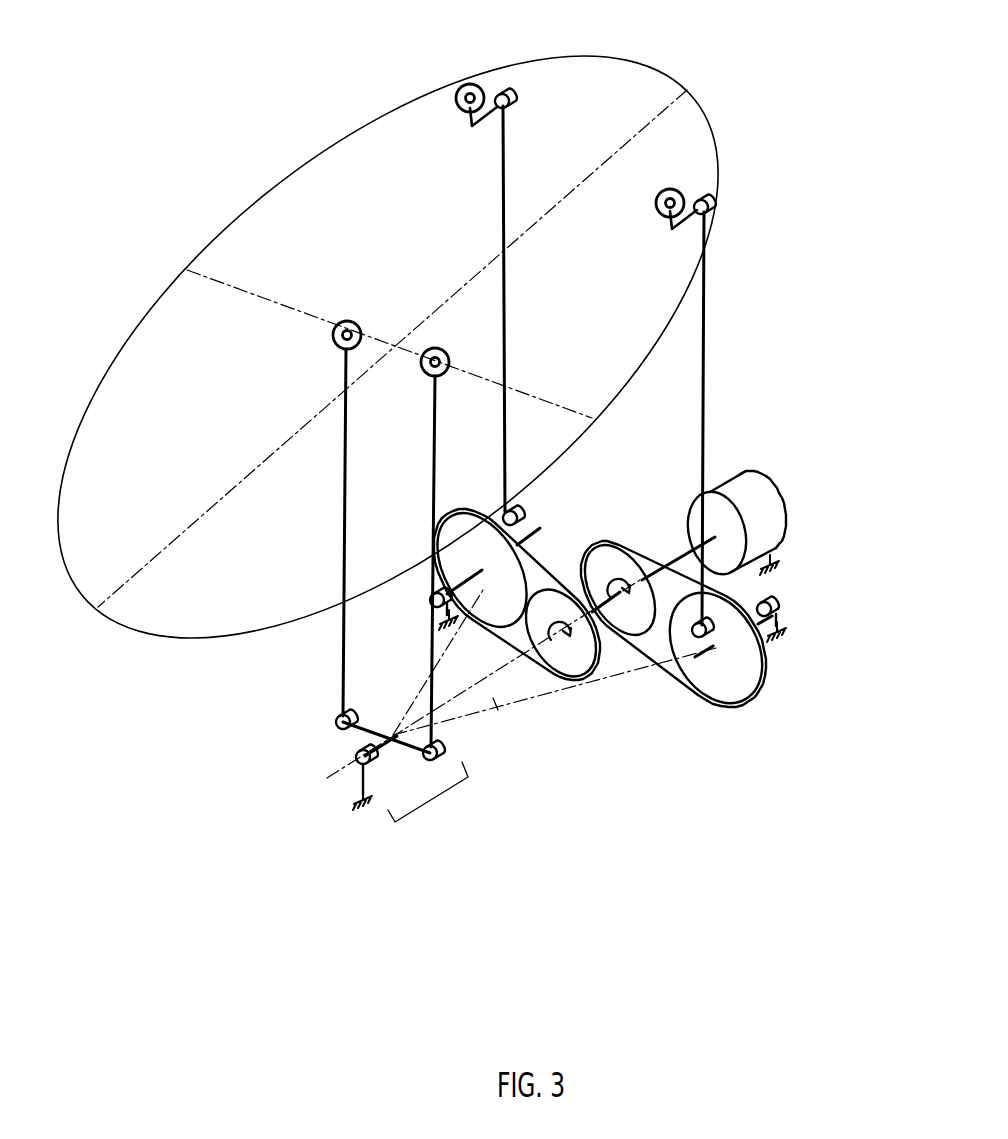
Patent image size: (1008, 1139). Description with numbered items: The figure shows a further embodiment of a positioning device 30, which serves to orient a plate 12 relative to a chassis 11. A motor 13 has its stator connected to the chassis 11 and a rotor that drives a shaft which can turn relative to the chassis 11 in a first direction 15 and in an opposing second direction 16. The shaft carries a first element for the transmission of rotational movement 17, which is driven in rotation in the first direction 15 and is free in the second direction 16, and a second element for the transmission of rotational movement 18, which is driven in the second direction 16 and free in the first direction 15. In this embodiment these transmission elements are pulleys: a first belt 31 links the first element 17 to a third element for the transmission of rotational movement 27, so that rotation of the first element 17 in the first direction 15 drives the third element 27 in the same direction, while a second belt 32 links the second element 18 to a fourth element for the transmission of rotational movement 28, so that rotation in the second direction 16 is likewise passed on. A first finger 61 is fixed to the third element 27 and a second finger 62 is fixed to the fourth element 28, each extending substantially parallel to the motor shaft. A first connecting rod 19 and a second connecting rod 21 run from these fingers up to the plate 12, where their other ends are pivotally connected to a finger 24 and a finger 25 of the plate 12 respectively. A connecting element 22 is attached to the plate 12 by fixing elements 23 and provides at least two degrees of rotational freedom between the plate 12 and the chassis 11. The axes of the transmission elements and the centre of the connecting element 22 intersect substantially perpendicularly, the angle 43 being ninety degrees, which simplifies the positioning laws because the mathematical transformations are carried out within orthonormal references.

The positioning device 30 is at (180, 97).
The plate 12 is at (717, 148).
The finger 24 is at (497, 96).
The finger 25 is at (705, 198).
The fixing elements 23 is at (352, 322).
The first connecting rod 19 is at (506, 262).
The second connecting rod 21 is at (706, 388).
The connecting element 22 is at (433, 800).
The angle 43 is at (442, 670).
The first belt 31 is at (540, 557).
The first element for the transmission of rotational movement 17 is at (585, 670).
The first direction 15 is at (562, 675).
The first finger 61 is at (518, 508).
The third element for the transmission of rotational movement 27 is at (490, 510).
The second direction 16 is at (640, 562).
The second element for the transmission of rotational movement 18 is at (618, 630).
The second belt 32 is at (647, 552).
The motor 13 is at (782, 521).
The fourth element for the transmission of rotational movement 28 is at (737, 688).
The second finger 62 is at (703, 683).
The chassis 11 is at (780, 632).